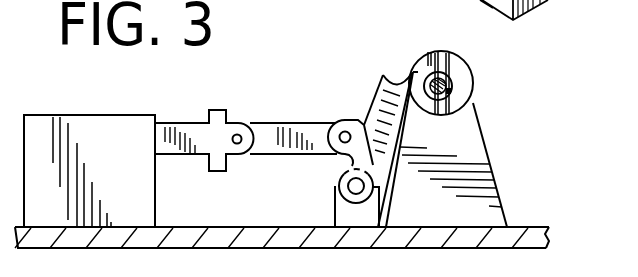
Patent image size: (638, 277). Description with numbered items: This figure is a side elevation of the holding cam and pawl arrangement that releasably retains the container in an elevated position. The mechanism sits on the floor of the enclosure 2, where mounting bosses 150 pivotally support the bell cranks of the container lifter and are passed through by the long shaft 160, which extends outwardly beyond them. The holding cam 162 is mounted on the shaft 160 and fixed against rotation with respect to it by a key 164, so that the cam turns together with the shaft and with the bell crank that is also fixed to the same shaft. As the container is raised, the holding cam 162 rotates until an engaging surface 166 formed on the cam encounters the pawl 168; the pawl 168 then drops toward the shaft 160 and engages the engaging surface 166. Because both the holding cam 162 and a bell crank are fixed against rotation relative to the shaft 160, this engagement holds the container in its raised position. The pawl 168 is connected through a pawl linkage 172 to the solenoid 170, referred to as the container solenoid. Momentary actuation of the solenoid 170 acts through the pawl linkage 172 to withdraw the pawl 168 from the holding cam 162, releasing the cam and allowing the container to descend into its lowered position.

The enclosure 2 is at (514, 227).
The mounting bosses 150 is at (478, 184).
The shaft 160 is at (446, 80).
The holding cam 162 is at (424, 99).
The key 164 is at (455, 91).
The engaging surface 166 is at (389, 83).
The pawl 168 is at (362, 127).
The solenoid 170 is at (100, 133).
The pawl linkage 172 is at (274, 140).